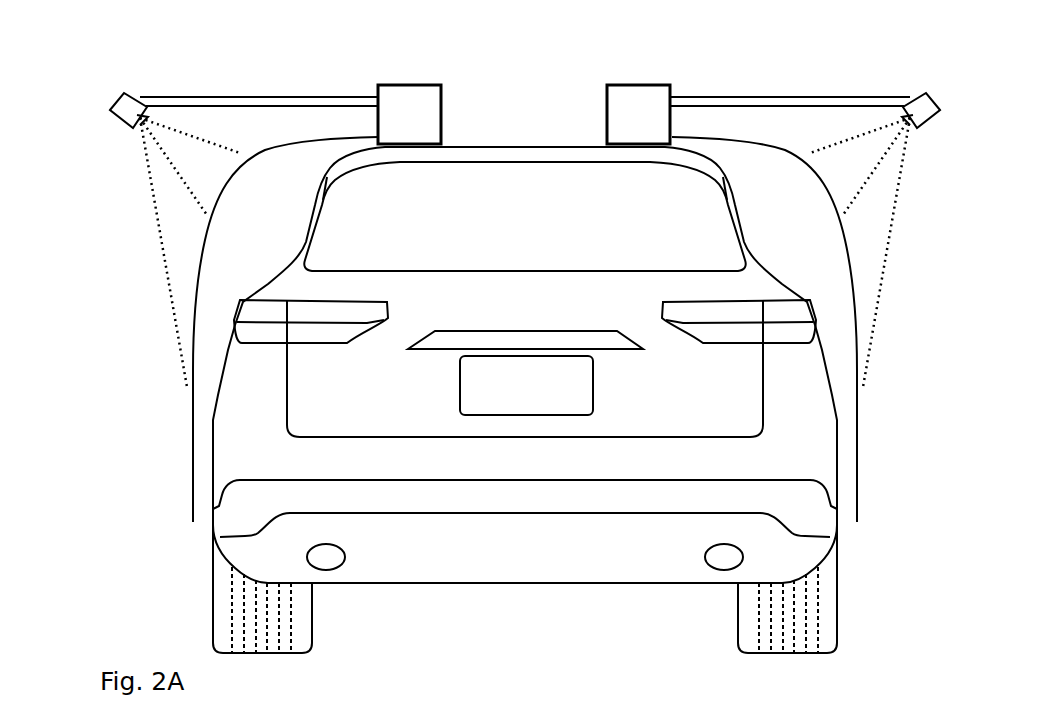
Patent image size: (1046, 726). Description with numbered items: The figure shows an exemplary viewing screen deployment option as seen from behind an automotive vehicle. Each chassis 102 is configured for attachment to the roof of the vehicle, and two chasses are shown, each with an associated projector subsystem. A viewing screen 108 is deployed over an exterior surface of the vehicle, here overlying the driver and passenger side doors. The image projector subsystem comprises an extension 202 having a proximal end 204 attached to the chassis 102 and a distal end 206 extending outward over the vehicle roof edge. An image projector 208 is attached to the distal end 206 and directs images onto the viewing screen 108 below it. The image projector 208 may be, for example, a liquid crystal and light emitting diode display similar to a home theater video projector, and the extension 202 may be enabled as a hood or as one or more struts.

The chassis 102 is at (430, 127).
The viewing screen 108 is at (193, 429).
The extension 202 is at (228, 86).
The proximal end 204 is at (378, 96).
The distal end 206 is at (131, 98).
The image projector 208 is at (947, 57).